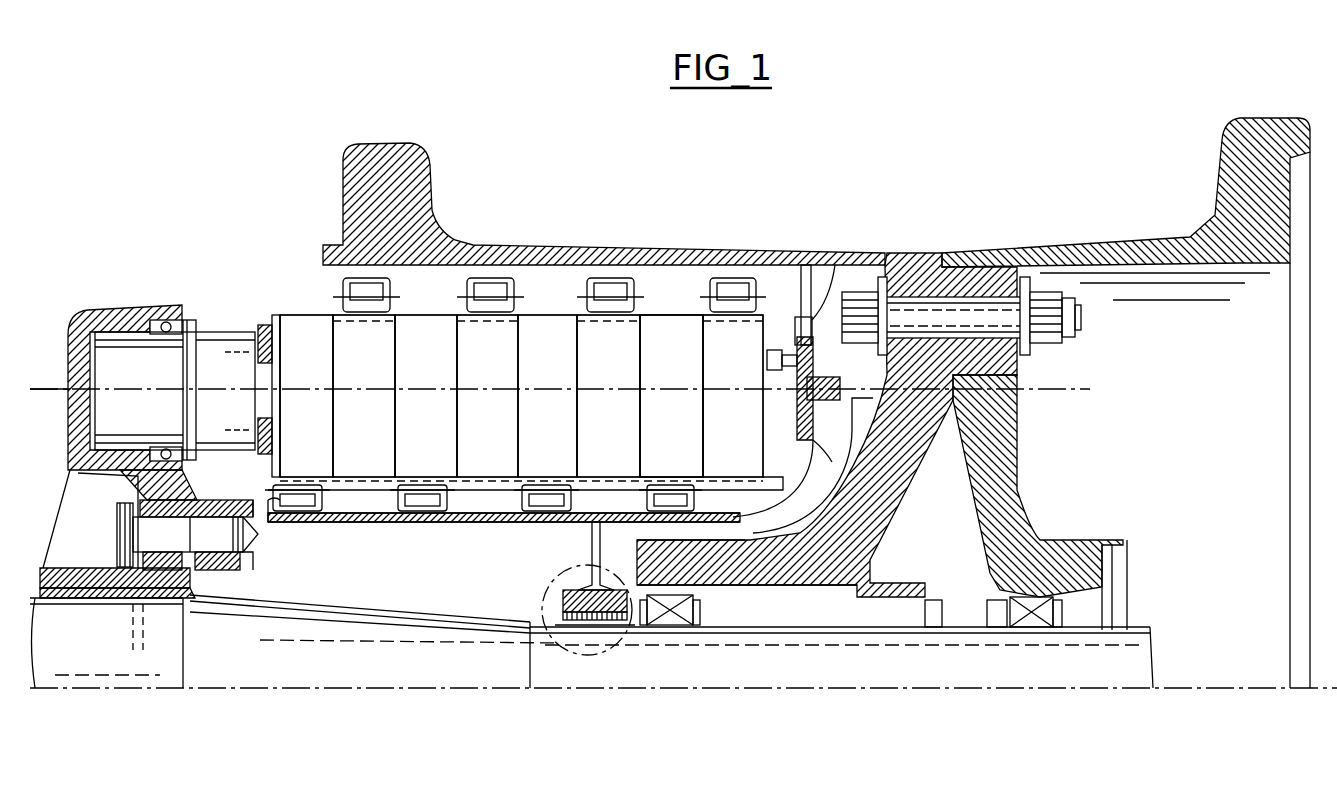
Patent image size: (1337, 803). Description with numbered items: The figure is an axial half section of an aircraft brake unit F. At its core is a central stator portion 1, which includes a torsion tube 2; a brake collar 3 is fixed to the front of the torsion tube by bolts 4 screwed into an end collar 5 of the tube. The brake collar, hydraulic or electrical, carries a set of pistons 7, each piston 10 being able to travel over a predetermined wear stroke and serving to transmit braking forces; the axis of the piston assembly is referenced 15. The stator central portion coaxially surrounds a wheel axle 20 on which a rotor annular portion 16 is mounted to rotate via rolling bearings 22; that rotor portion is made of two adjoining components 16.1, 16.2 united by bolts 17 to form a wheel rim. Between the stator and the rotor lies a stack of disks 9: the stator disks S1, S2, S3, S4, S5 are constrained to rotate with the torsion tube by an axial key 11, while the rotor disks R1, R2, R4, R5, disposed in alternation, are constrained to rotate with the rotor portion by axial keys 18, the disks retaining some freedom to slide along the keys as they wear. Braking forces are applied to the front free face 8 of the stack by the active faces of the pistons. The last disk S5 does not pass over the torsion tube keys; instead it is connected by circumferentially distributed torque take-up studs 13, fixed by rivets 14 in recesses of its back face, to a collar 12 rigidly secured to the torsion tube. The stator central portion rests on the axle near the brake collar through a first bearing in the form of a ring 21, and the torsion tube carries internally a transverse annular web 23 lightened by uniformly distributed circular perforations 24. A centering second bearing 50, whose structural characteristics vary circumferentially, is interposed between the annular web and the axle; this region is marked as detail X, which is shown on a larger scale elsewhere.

The stator central portion 1 is at (338, 521).
The torsion tube 2 is at (382, 522).
The brake collar 3 is at (95, 318).
The bolts 4 is at (125, 532).
The end collar 5 is at (222, 553).
The set of pistons 7 is at (220, 328).
The front free face 8 is at (277, 325).
The stack of disks 9 is at (557, 322).
The piston 10 is at (262, 445).
The axial key 11 is at (474, 520).
The collar 12 is at (822, 386).
The torque take-up studs 13 is at (808, 366).
The rivets 14 is at (804, 318).
The axis of the piston assembly 15 is at (45, 395).
The rotor annular portion 16 is at (808, 256).
The adjoining component 16.1 is at (752, 565).
The adjoining component 16.2 is at (1022, 516).
The bolts 17 is at (985, 308).
The axial keys 18 is at (690, 320).
The wheel axle 20 is at (318, 602).
The ring 21 is at (88, 600).
The rolling bearings 22 is at (672, 640).
The transverse annular web 23 is at (590, 524).
The circular perforations 24 is at (582, 560).
The centering bearing 50 is at (552, 603).
The stator disk S1 is at (295, 328).
The stator disk S2 is at (430, 328).
The stator disk S3 is at (584, 326).
The stator disk S4 is at (690, 326).
The last stator disk S5 is at (826, 330).
The rotor disk R1 is at (385, 326).
The rotor disk R2 is at (508, 326).
The rotor disk R4 is at (628, 328).
The rotor segment 5 R5 is at (750, 330).
The aircraft brake unit F is at (178, 268).
The detail X is at (580, 650).